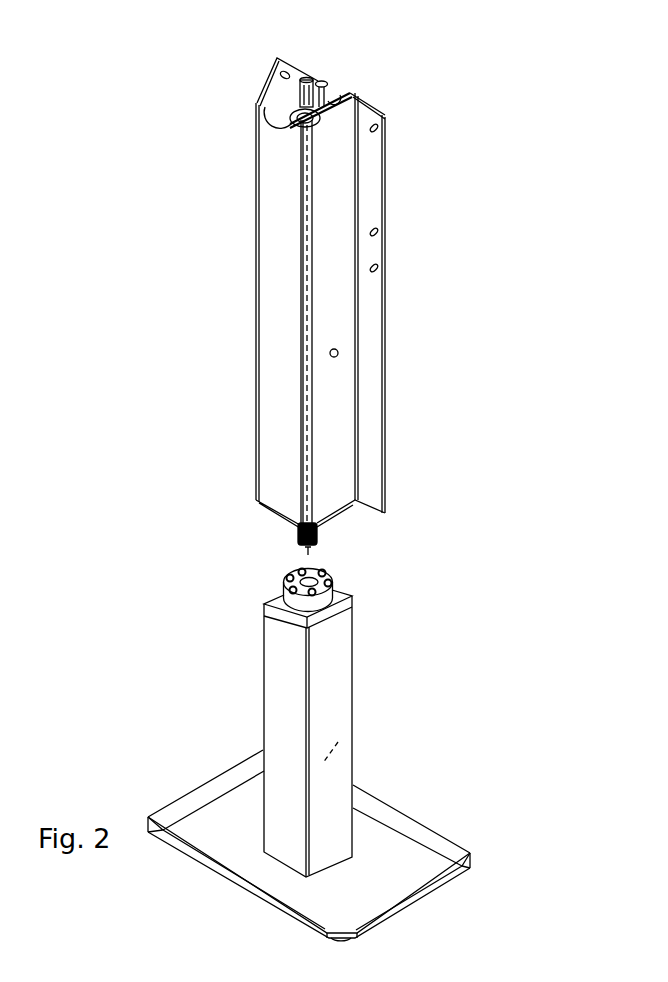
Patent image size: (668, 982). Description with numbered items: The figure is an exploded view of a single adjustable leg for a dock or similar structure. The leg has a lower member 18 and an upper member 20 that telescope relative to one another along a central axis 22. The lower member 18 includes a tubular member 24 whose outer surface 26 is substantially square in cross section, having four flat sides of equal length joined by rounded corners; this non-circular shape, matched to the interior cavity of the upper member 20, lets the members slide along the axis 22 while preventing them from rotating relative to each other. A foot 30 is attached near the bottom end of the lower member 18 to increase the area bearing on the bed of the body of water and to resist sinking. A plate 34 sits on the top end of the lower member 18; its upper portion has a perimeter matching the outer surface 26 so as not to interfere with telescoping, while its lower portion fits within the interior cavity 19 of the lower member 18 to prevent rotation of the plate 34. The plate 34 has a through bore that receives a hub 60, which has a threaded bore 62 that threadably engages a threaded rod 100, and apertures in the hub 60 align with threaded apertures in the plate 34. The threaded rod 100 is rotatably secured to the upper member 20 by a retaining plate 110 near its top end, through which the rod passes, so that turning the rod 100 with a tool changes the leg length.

The upper member 20 is at (390, 213).
The tubular member 24 is at (337, 353).
The retaining plate 110 is at (338, 98).
The threaded rod 100 is at (297, 524).
The central axis 22 is at (312, 556).
The threaded bore 62 is at (289, 577).
The hub 60 is at (296, 602).
The plate 34 is at (270, 614).
The outer surface 26 is at (330, 653).
The interior cavity 19 is at (343, 733).
The lower member 18 is at (264, 747).
The foot 30 is at (382, 876).